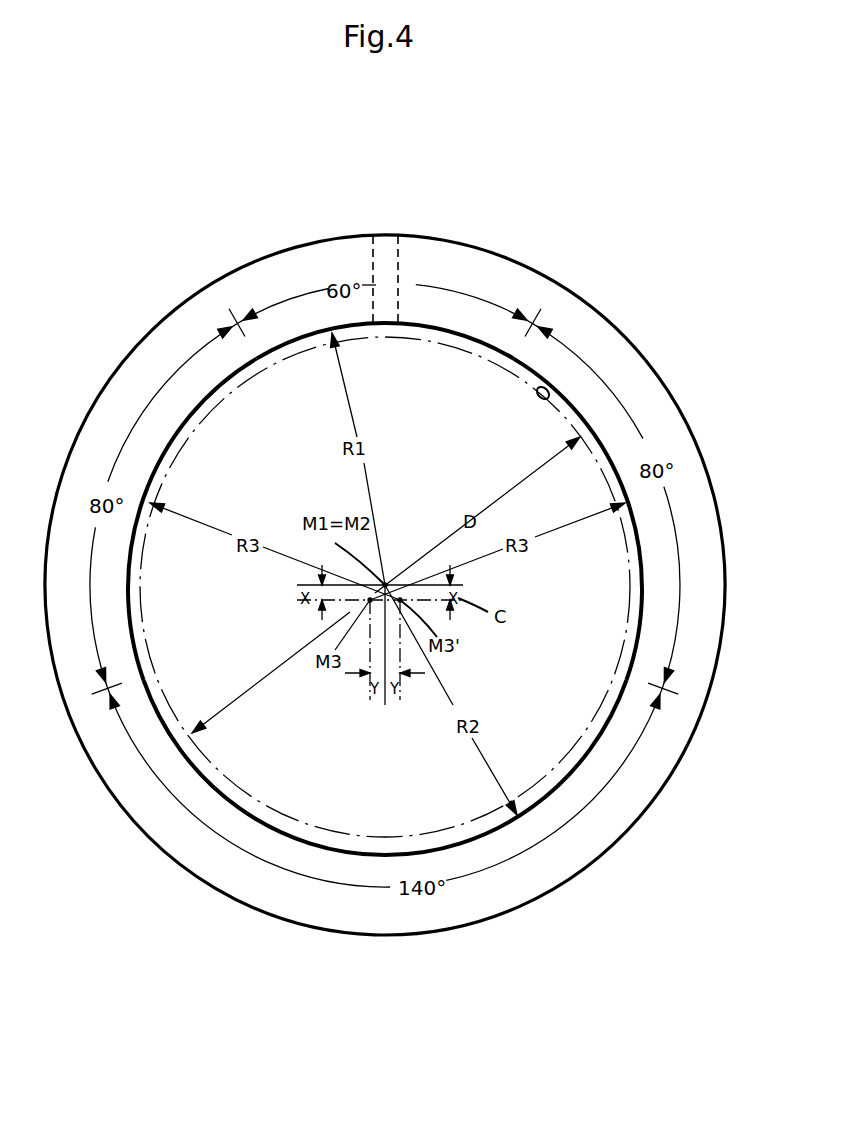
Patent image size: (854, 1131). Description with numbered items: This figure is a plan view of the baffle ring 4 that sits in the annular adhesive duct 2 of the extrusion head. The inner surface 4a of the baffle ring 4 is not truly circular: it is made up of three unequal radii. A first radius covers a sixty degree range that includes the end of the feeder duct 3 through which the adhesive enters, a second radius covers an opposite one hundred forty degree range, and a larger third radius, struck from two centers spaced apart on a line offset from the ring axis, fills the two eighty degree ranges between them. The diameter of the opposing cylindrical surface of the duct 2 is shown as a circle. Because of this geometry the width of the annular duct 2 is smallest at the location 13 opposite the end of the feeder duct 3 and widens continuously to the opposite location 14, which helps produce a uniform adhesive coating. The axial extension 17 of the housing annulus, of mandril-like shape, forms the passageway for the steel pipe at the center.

The annular duct 2 is at (568, 413).
The feeder duct 3 is at (388, 257).
The baffle ring 4 is at (487, 273).
The inner surface 4a is at (547, 390).
The location of smaller duct width 13 is at (385, 333).
The location of larger duct width 14 is at (378, 848).
The axial extension 17 is at (283, 760).